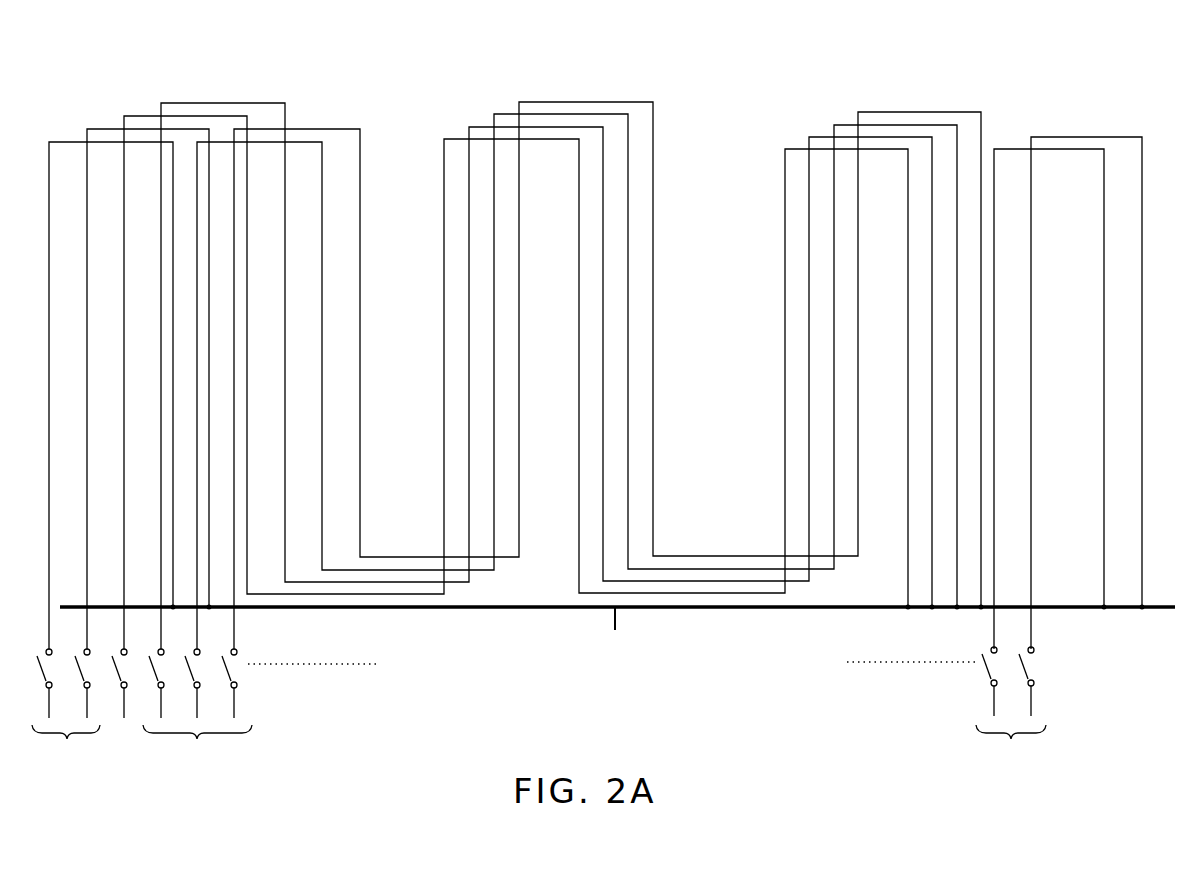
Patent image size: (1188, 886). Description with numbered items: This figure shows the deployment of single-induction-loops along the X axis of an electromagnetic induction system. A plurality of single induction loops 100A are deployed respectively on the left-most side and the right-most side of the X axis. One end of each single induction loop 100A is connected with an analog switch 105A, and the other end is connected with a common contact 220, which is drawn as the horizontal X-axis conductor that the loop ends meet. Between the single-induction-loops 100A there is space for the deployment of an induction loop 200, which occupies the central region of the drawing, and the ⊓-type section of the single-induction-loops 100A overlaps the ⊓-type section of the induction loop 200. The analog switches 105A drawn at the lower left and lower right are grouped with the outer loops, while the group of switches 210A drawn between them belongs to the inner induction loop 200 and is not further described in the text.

The single induction loop 100A is at (58, 142).
The induction loop 200 is at (556, 102).
The common contact 220 is at (615, 620).
The analog switch 105A is at (546, 707).
The inner loop switches 210A is at (182, 708).